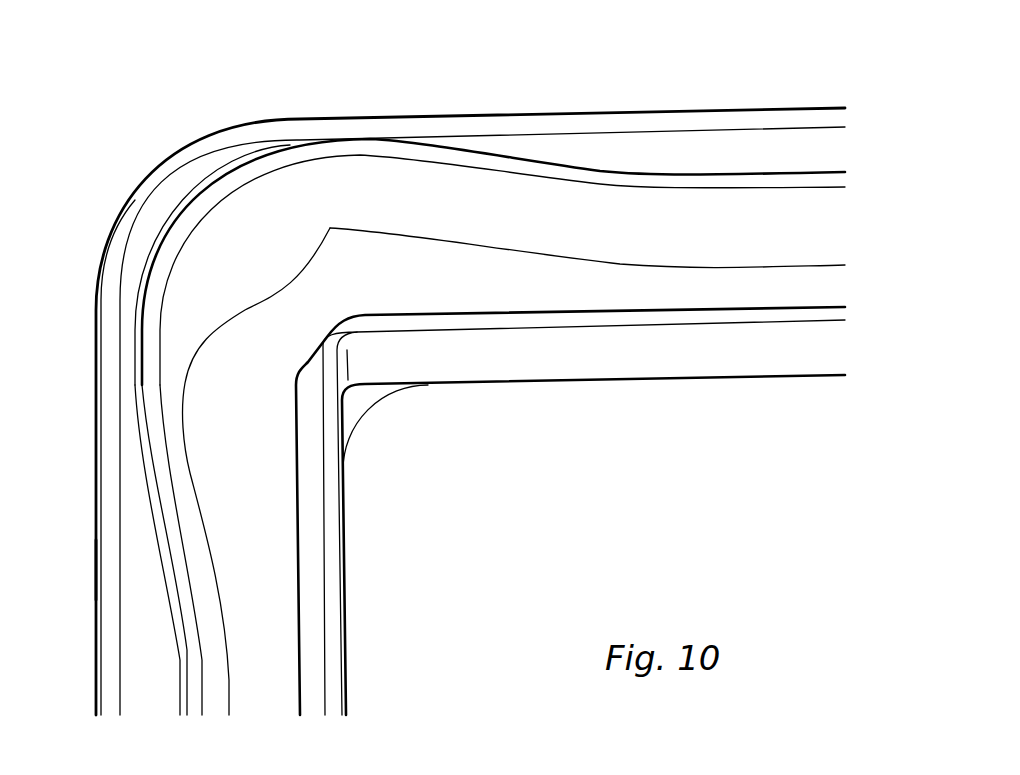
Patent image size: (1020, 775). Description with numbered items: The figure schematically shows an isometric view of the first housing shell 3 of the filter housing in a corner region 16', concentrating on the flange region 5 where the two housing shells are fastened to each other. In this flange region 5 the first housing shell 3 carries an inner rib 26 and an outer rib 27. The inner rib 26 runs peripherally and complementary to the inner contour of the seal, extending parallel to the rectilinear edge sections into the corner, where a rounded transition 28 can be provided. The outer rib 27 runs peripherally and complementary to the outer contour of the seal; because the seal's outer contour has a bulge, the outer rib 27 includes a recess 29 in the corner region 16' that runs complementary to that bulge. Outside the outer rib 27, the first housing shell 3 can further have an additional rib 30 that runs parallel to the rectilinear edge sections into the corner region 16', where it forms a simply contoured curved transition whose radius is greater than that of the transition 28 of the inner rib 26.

The flange region 5 is at (92, 277).
The additional rib 30 is at (104, 578).
The corner region 16' is at (482, 361).
The outer rib 27 is at (465, 163).
The recess 29 is at (182, 327).
The rounded transition 28 is at (338, 327).
The inner rib 26 is at (515, 313).
The first housing shell 3 is at (655, 462).